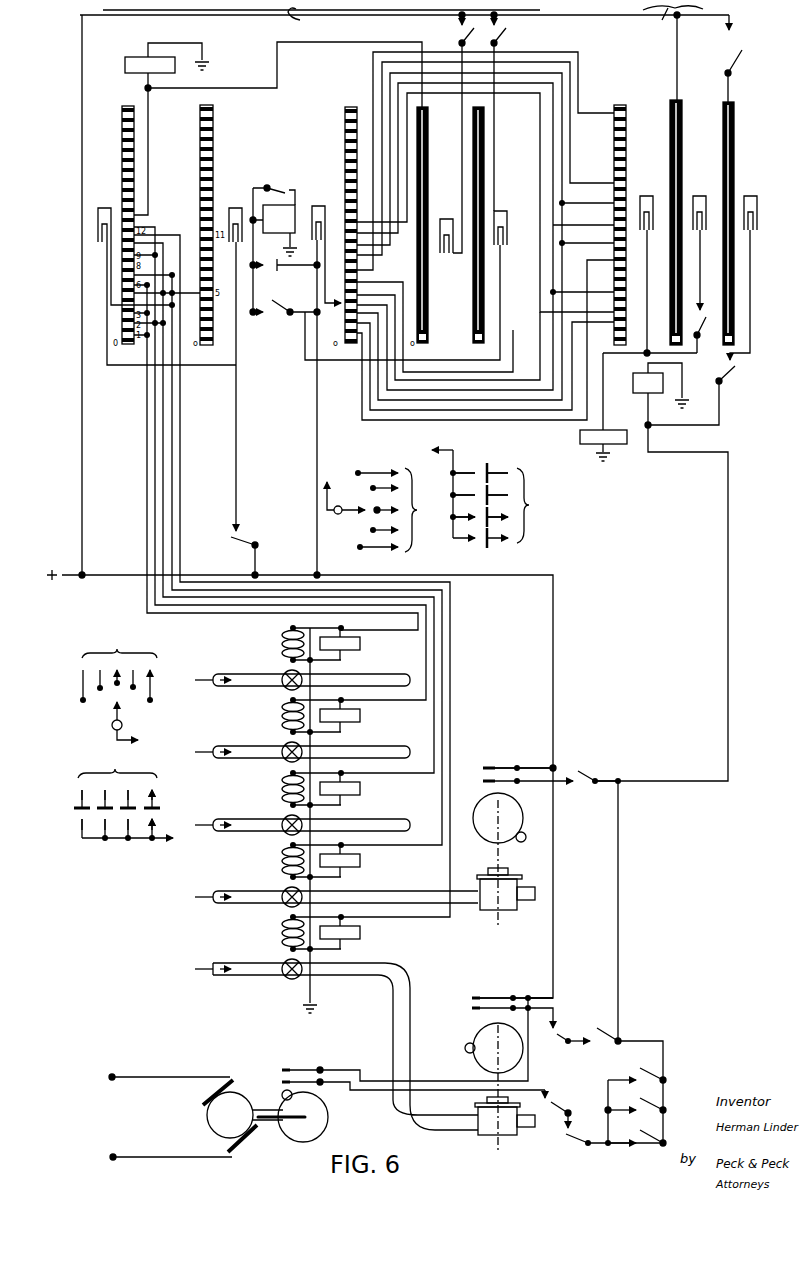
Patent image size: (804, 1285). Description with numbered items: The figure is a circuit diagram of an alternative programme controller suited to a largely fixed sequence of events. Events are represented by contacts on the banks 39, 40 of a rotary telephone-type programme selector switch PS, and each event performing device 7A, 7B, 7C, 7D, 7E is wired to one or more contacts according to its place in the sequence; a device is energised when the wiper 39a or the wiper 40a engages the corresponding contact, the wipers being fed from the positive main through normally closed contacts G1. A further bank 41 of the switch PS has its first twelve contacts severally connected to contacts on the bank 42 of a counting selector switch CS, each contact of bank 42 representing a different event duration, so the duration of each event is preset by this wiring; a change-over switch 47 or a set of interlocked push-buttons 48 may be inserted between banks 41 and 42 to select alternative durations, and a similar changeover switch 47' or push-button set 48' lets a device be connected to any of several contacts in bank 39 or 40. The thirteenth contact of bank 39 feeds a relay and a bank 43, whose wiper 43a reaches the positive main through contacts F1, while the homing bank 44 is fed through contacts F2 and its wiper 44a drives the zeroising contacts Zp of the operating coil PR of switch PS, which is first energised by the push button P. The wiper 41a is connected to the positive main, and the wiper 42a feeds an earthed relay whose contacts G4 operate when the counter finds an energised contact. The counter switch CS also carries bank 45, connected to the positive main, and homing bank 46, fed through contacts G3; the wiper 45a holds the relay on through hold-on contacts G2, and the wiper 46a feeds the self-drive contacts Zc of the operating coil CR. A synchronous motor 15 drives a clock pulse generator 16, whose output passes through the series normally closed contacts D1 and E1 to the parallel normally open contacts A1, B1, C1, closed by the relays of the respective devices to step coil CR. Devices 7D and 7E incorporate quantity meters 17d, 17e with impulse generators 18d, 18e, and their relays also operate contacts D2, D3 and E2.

The contact bank 39 is at (123, 107).
The contact bank 40 is at (209, 105).
The contact bank 41 is at (351, 107).
The contact bank 42 is at (617, 106).
The bank of contacts 43 is at (428, 109).
The homing bank of contacts 44 is at (484, 112).
The contact bank 45 is at (674, 100).
The homing bank 46 is at (735, 106).
The wiper 39a is at (111, 305).
The wiper 40a is at (215, 305).
The wiper 41a is at (330, 280).
The wiper 42a is at (640, 222).
The wiper 43a is at (430, 303).
The wiper 44a is at (486, 303).
The wiper 45a is at (693, 222).
The wiper 46a is at (735, 283).
The change-over switch 47 is at (379, 506).
The set of parallel connected interlocked push-buttons 48 is at (476, 497).
The changeover switch 47' is at (124, 692).
The set of interlocked push-buttons 48' is at (121, 810).
The event performing device 7A is at (302, 657).
The event performing device 7B is at (302, 729).
The event performing device 7C is at (302, 802).
The event performing device 7D is at (336, 874).
The event performing device 7E is at (284, 959).
The synchronous motor 15 is at (238, 1123).
The clock electrical pulse generator 16 is at (278, 1081).
The quantity meter 17d is at (510, 903).
The quantity meter 17e is at (490, 1132).
The electrical impulse generator 18d is at (523, 813).
The electrical impulse generator 18e is at (475, 1036).
The programme selector switch PS is at (300, 22).
The counting selector switch CS is at (673, 53).
The normally open contacts F1 is at (455, 132).
The normally open contacts F2 is at (506, 111).
The normally closed contacts G1 is at (247, 551).
The hold-on contacts G2 is at (699, 303).
The normally open contacts G3 is at (741, 58).
The relay contacts G4 is at (285, 318).
The self-drive or zeroising contacts Zp is at (269, 182).
The self-drive contacts Zc is at (698, 329).
The operating coil PR is at (282, 214).
The push button P is at (285, 274).
The operating coil CR is at (650, 394).
The normally closed contacts D1 is at (564, 1101).
The normally open contacts D2 is at (552, 770).
The normally closed contacts D3 is at (521, 1029).
The normally closed contacts E1 is at (606, 1135).
The normally open contacts E2 is at (615, 1078).
The normally open contacts A1 is at (637, 1098).
The normally open contacts B1 is at (645, 1101).
The normally open contacts C1 is at (648, 1135).